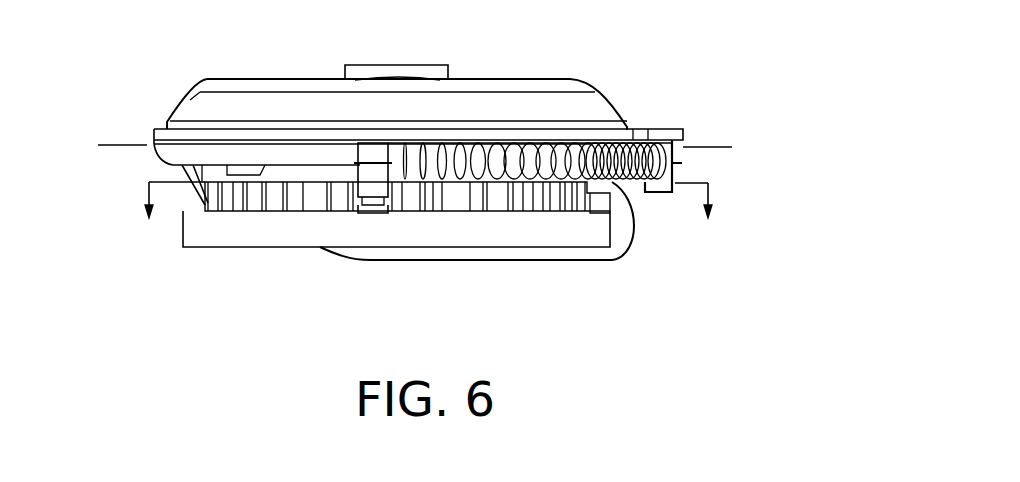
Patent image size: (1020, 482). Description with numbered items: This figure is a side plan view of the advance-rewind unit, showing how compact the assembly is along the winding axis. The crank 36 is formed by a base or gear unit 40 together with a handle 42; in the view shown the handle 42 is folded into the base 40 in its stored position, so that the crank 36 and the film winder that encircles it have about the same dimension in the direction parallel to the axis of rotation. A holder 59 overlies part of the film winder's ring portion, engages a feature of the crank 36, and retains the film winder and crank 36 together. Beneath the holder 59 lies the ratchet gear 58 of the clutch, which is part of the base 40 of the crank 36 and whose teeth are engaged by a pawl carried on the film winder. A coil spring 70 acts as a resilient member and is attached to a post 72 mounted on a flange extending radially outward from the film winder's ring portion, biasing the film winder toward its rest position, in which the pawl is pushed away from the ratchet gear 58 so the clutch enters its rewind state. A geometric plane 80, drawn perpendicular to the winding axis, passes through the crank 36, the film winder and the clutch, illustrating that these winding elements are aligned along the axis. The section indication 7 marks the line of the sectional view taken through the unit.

The crank 36 is at (443, 40).
The handle 42 is at (437, 65).
The holder 59 is at (597, 84).
The geometric plane 80 is at (123, 144).
The ratchet gear 58 is at (297, 208).
The base or gear unit 40 is at (205, 248).
The post 72 is at (378, 213).
The coil spring 70 is at (627, 183).
The section line 7- 7 is at (427, 216).